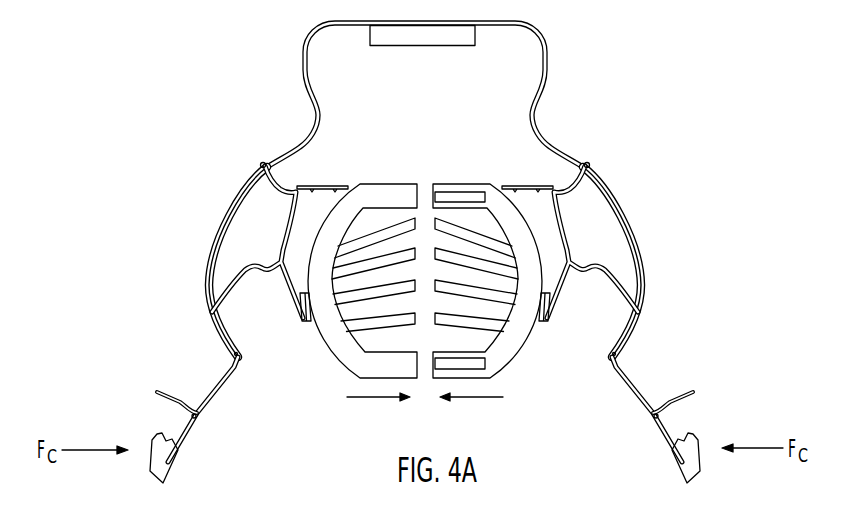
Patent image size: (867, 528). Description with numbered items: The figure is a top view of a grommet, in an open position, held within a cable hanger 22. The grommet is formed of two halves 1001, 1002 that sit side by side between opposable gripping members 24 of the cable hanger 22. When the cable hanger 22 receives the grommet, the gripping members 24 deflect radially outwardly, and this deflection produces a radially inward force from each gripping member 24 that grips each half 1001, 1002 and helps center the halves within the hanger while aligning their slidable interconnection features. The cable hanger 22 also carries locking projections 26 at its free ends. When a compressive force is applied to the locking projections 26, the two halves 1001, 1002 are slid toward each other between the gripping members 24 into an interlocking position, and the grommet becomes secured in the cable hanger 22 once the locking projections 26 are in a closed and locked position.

The cable hanger 22 is at (547, 54).
The opposable gripping members 24 is at (312, 187).
The locking projections 26 is at (177, 458).
The first half of the grommet 1001 is at (386, 193).
The second half of the grommet 1002 is at (450, 192).